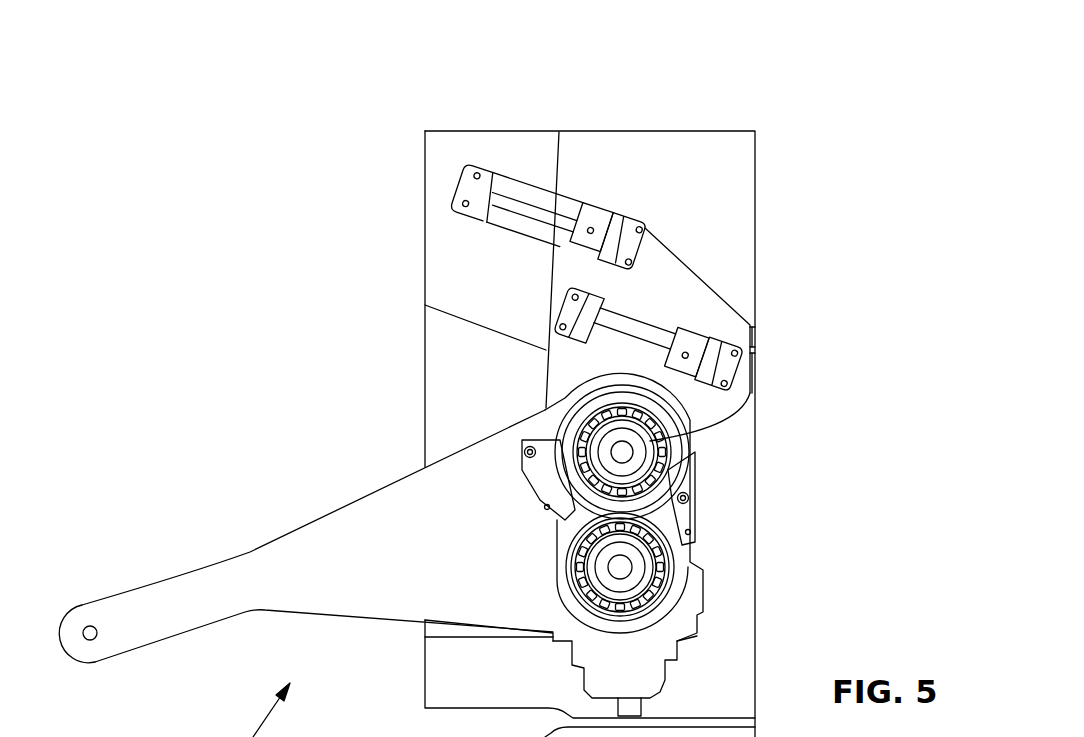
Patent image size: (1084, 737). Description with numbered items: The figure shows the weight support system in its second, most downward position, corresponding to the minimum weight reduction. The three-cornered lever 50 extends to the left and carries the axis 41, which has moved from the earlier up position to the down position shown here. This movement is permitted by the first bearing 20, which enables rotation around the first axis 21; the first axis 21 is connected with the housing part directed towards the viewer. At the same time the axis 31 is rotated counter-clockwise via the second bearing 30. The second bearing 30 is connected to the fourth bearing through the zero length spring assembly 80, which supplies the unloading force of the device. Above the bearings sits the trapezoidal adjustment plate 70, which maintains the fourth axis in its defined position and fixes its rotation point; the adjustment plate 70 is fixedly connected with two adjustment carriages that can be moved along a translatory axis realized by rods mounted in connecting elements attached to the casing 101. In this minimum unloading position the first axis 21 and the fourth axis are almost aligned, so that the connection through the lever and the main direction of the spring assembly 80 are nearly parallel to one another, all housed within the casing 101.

The casing 101 is at (710, 224).
The adjustment plate 70 is at (685, 283).
The first bearing 20 is at (752, 345).
The first axis 21 is at (622, 452).
The zero length spring assembly 80 is at (702, 551).
The axis 31 is at (620, 567).
The second bearing 30 is at (647, 593).
The three-cornered lever 50 is at (337, 525).
The axis 41 is at (90, 626).